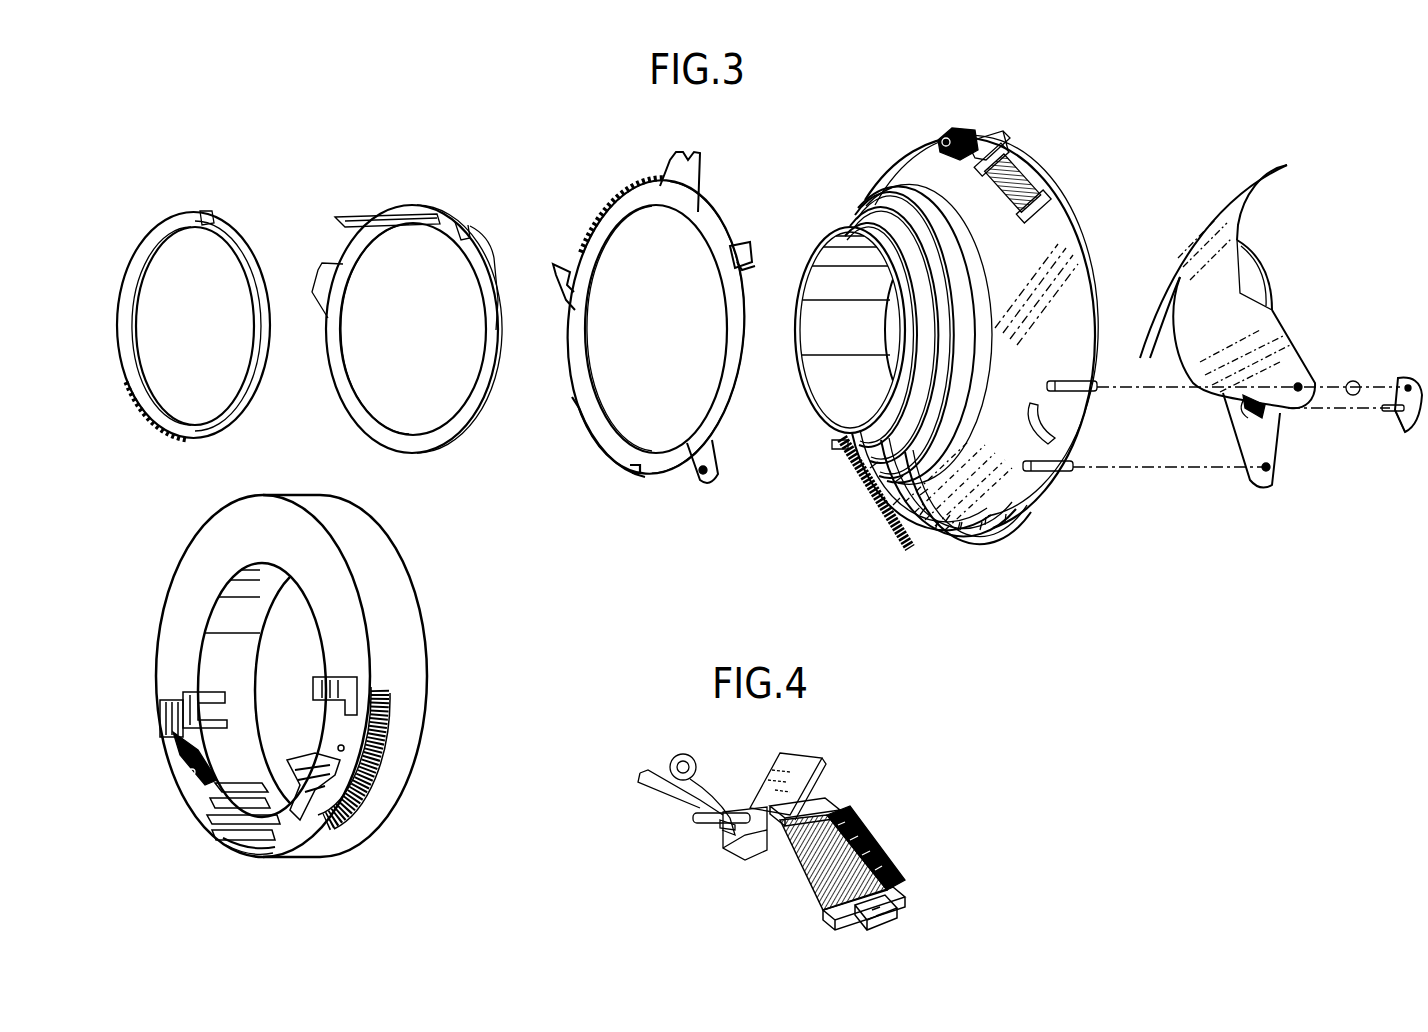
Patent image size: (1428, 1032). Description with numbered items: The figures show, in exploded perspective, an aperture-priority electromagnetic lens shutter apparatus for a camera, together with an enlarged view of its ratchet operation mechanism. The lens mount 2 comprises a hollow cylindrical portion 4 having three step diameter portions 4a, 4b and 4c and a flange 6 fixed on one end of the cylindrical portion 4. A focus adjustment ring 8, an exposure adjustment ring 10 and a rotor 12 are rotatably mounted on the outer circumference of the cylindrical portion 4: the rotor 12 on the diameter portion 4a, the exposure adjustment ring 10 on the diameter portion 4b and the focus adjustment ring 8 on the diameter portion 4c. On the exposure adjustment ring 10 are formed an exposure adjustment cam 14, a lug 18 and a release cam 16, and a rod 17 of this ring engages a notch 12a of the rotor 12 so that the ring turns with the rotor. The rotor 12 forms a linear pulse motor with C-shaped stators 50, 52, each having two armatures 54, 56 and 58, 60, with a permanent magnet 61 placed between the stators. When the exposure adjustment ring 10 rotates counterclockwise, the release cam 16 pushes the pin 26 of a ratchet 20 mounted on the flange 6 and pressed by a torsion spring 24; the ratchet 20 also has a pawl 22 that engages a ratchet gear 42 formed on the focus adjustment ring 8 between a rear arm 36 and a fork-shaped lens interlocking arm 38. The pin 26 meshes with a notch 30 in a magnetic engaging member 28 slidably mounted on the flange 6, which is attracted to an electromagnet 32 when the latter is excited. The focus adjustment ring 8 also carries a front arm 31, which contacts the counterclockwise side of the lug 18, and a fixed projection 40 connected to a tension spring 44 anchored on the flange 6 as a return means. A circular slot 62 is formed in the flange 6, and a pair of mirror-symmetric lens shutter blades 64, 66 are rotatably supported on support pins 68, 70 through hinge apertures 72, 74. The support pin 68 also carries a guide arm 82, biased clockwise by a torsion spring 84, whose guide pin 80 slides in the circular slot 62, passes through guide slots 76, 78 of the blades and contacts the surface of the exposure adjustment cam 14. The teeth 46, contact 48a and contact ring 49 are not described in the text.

In FIG. 3, the lens mount 2 is at (976, 349).
In FIG. 3, the hollow cylindrical portion 4 is at (941, 527).
In FIG. 3, the step diameter portion 4a is at (922, 527).
In FIG. 3, the step diameter portion 4b is at (962, 522).
In FIG. 3, the step diameter portion 4c is at (912, 583).
In FIG. 3, the flange 6 is at (908, 167).
In FIG. 3, the focus adjustment ring 8 is at (603, 488).
In FIG. 3, the exposure adjustment ring 10 is at (347, 393).
In FIG. 3, the rotor 12 is at (197, 200).
In FIG. 3, the notch 12a is at (214, 222).
In FIG. 3, the exposure adjustment cam 14 is at (491, 243).
In FIG. 3, the release cam 16 is at (327, 268).
In FIG. 3, the rod 17 is at (367, 215).
In FIG. 3, the lug 18 is at (466, 225).
In FIG. 3, the ratchet 20 is at (968, 132).
In FIG. 4, the ratchet 20 is at (685, 840).
In FIG. 4, the pawl 22 is at (717, 824).
In FIG. 4, the torsion spring 24 is at (682, 795).
In FIG. 4, the pin 26 is at (728, 812).
In FIG. 3, the engaging member 28 is at (1008, 140).
In FIG. 4, the engaging member 28 is at (810, 773).
In FIG. 4, the notch 30 is at (760, 848).
In FIG. 3, the front arm 31 is at (750, 250).
In FIG. 3, the electromagnet 32 is at (1032, 180).
In FIG. 4, the electromagnet 32 is at (847, 836).
In FIG. 3, the rear arm 36 is at (556, 282).
In FIG. 3, the lens interlocking arm 38 is at (672, 172).
In FIG. 3, the fixed projection 40 is at (692, 462).
In FIG. 3, the ratchet gear 42 is at (600, 212).
In FIG. 3, the tension spring 44 is at (866, 497).
In FIG. 3, the teeth 46 is at (142, 410).
In FIG. 3, the contact 48a is at (190, 680).
In FIG. 3, the contact ring 49 is at (362, 563).
In FIG. 3, the stator 50 is at (345, 750).
In FIG. 3, the stator 52 is at (172, 752).
In FIG. 3, the armature 54 is at (345, 690).
In FIG. 3, the armature 56 is at (334, 797).
In FIG. 3, the armature 58 is at (210, 808).
In FIG. 3, the armature 60 is at (160, 714).
In FIG. 3, the permanent magnet 61 is at (248, 846).
In FIG. 3, the circular slot 62 is at (1060, 426).
In FIG. 3, the lens shutter blade 64 is at (1272, 330).
In FIG. 3, the lens shutter blade 66 is at (1262, 268).
In FIG. 3, the support pin 68 is at (1092, 383).
In FIG. 3, the support pin 70 is at (1063, 475).
In FIG. 3, the hinge aperture 72 is at (1302, 384).
In FIG. 3, the hinge aperture 74 is at (1262, 472).
In FIG. 3, the guide slot 76 is at (1283, 425).
In FIG. 3, the guide slot 78 is at (1244, 406).
In FIG. 3, the guide pin 80 is at (1398, 432).
In FIG. 3, the guide arm 82 is at (1400, 380).
In FIG. 3, the torsion spring 84 is at (1355, 412).